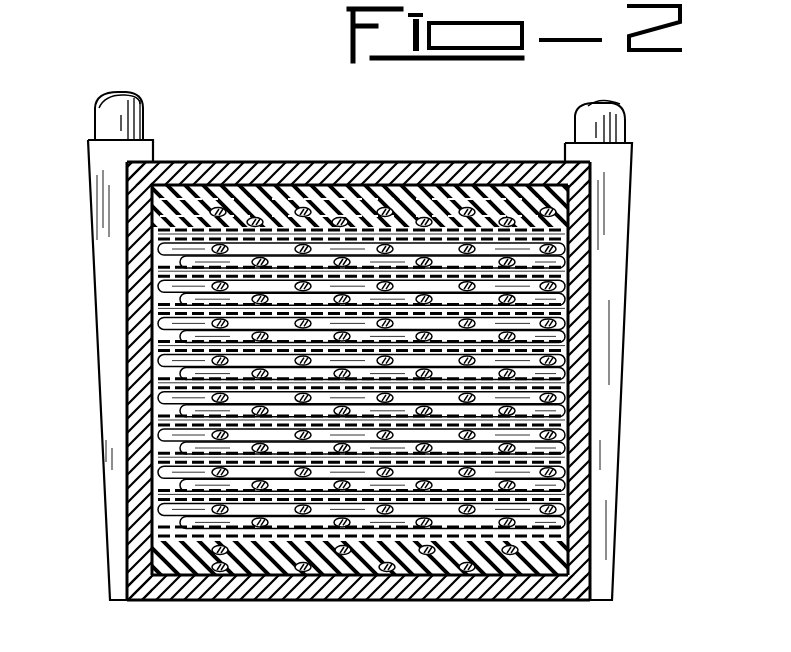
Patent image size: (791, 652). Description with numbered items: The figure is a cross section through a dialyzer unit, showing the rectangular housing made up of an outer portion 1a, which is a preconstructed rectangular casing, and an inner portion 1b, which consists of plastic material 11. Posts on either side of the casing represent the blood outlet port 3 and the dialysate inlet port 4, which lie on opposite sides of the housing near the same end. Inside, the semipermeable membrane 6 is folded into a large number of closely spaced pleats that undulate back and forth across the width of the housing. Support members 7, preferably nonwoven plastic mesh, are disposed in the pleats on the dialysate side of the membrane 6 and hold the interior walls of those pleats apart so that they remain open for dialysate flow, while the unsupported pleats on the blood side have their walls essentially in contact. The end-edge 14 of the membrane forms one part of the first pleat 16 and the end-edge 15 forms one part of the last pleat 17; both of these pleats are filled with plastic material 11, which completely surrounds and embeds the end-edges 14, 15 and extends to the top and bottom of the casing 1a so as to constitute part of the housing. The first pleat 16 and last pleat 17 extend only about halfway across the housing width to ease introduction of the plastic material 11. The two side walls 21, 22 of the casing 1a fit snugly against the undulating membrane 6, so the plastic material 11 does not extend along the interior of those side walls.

The outer portion 1a is at (205, 163).
The inner portion 1b is at (292, 190).
The blood outlet port 3 is at (618, 172).
The dialysate inlet port 4 is at (105, 161).
The semipermeable membrane 6 is at (568, 405).
The support members 7 is at (165, 505).
The plastic material 11 is at (162, 200).
The end-edge 14 is at (352, 186).
The end-edge 15 is at (350, 588).
The first pleat 16 is at (590, 222).
The last pleat 17 is at (555, 565).
The side wall 21 is at (140, 283).
The side wall 22 is at (590, 242).